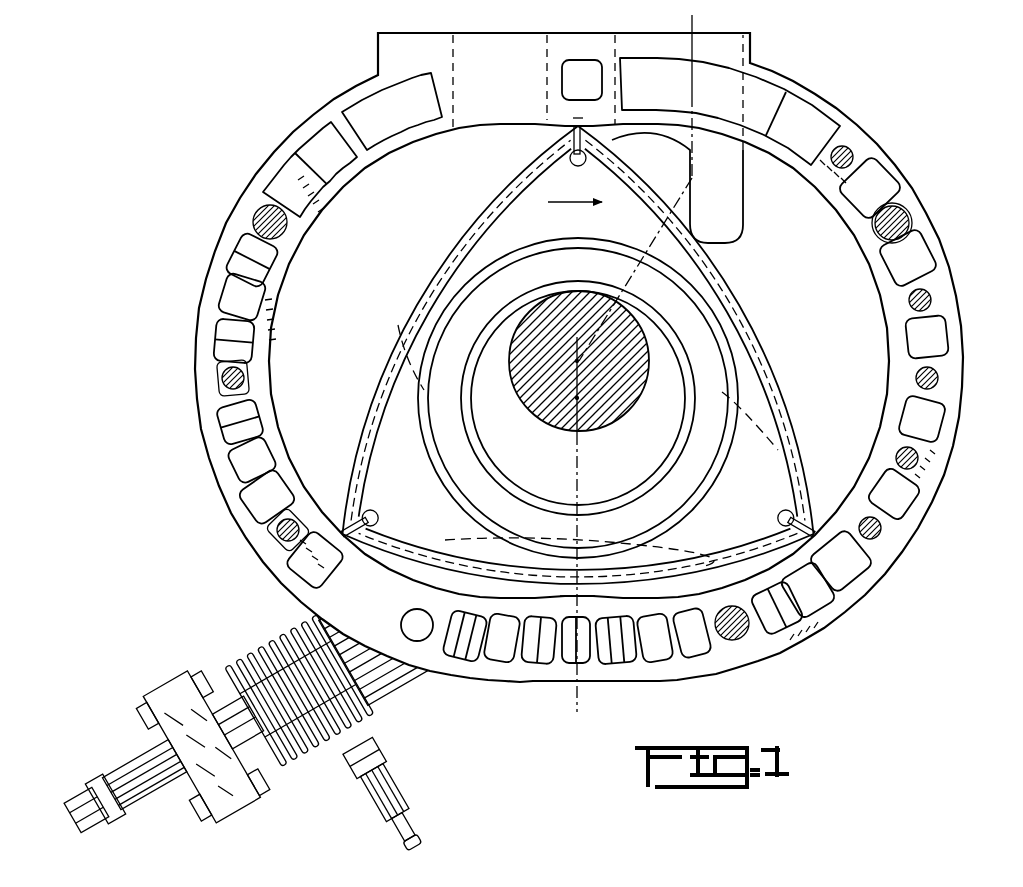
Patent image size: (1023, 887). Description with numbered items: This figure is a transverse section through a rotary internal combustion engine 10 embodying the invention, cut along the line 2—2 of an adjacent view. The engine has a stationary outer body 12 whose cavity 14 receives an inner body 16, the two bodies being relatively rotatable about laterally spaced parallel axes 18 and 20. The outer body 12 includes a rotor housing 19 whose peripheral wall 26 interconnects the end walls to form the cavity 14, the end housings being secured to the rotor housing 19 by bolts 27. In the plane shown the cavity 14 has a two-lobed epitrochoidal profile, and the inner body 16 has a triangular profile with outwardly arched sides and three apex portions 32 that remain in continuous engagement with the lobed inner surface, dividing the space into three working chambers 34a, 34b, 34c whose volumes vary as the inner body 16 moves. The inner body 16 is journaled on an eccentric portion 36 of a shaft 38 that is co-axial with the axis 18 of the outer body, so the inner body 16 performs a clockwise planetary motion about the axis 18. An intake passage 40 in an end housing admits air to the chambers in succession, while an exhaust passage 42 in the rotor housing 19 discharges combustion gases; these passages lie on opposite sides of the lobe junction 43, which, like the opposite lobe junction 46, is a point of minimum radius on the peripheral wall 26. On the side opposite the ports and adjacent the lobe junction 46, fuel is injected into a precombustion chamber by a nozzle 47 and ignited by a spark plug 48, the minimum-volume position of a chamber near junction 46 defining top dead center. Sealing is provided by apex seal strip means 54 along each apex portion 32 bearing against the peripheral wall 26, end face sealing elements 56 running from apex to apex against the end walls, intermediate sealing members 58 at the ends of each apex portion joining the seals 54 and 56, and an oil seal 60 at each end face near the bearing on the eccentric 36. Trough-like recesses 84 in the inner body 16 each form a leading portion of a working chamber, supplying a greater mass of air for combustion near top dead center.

The line 2— 2 is at (697, 22).
The rotary internal combustion engine 10 is at (577, 357).
The outer body 12 is at (296, 125).
The cavity 14 is at (577, 361).
The inner body 16 is at (747, 318).
The axis 18 is at (577, 357).
The rotor housing 19 is at (947, 258).
The axis 20 is at (577, 400).
The peripheral wall 26 is at (893, 357).
The bolts 27 is at (938, 372).
The apex portions 32 is at (588, 144).
The working chamber 34a is at (710, 583).
The working chamber 34b is at (360, 248).
The working chamber 34c is at (818, 273).
The eccentric portion 36 is at (525, 456).
The shaft 38 is at (612, 413).
The intake passage 40 is at (730, 208).
The exhaust passage 42 is at (483, 112).
The junction 43 is at (578, 122).
The lobe junction 46 is at (578, 595).
The nozzle 47 is at (135, 772).
The spark plug 48 is at (398, 780).
The apex seal strip means 54 is at (569, 140).
The end face sealing elements 56 is at (413, 333).
The intermediate sealing members 58 is at (588, 163).
The oil seal 60 is at (546, 240).
The trough-like recesses 84 is at (415, 378).